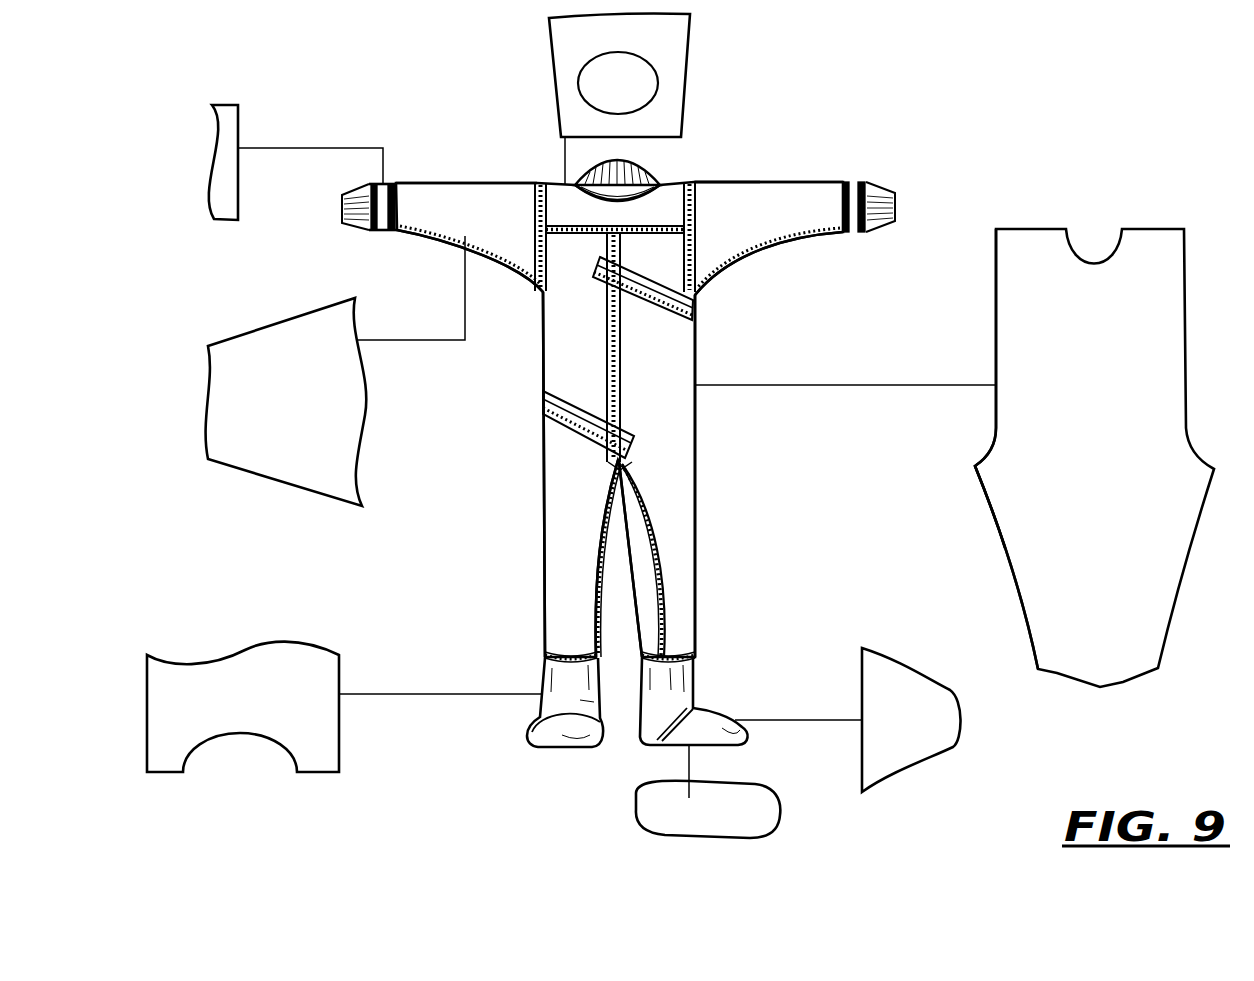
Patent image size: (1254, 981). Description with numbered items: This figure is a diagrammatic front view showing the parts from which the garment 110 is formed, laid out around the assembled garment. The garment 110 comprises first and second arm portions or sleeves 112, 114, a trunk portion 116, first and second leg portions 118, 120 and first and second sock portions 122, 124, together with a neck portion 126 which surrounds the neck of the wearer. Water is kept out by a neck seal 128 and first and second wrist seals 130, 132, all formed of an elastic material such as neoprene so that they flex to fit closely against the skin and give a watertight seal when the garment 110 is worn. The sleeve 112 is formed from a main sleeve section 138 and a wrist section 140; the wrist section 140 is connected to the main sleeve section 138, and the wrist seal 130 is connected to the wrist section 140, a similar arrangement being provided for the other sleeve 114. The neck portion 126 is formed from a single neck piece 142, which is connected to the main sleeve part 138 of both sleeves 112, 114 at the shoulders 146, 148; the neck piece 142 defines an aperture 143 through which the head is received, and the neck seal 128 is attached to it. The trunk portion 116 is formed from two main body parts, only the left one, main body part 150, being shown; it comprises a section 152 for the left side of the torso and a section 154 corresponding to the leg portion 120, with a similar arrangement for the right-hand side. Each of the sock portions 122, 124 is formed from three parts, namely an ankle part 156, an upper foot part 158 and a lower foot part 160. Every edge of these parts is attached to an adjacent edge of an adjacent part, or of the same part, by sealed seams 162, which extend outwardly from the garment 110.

The garment 110 is at (651, 365).
The first arm portion or sleeve 112 is at (423, 195).
The second arm portion or sleeve 114 is at (813, 223).
The trunk portion 116 is at (560, 360).
The first leg portion 118 is at (555, 575).
The second leg portion 120 is at (683, 580).
The first sock portion 122 is at (565, 735).
The second sock portion 124 is at (677, 702).
The neck portion 126 is at (675, 192).
The neck seal 128 is at (613, 163).
The first wrist seal 130 is at (358, 224).
The second wrist seal 132 is at (875, 217).
The main sleeve section 138 is at (233, 428).
The wrist section 140 is at (224, 197).
The neck piece 142 is at (570, 33).
The aperture 143 is at (633, 62).
The shoulder 146 is at (536, 187).
The shoulder 148 is at (702, 177).
The main body part 150 is at (1035, 255).
The torso side section 152 is at (1015, 335).
The leg section 154 is at (1018, 512).
The ankle part 156 is at (285, 723).
The upper foot part 158 is at (923, 738).
The lower foot part 160 is at (757, 813).
The seams 162 is at (622, 387).